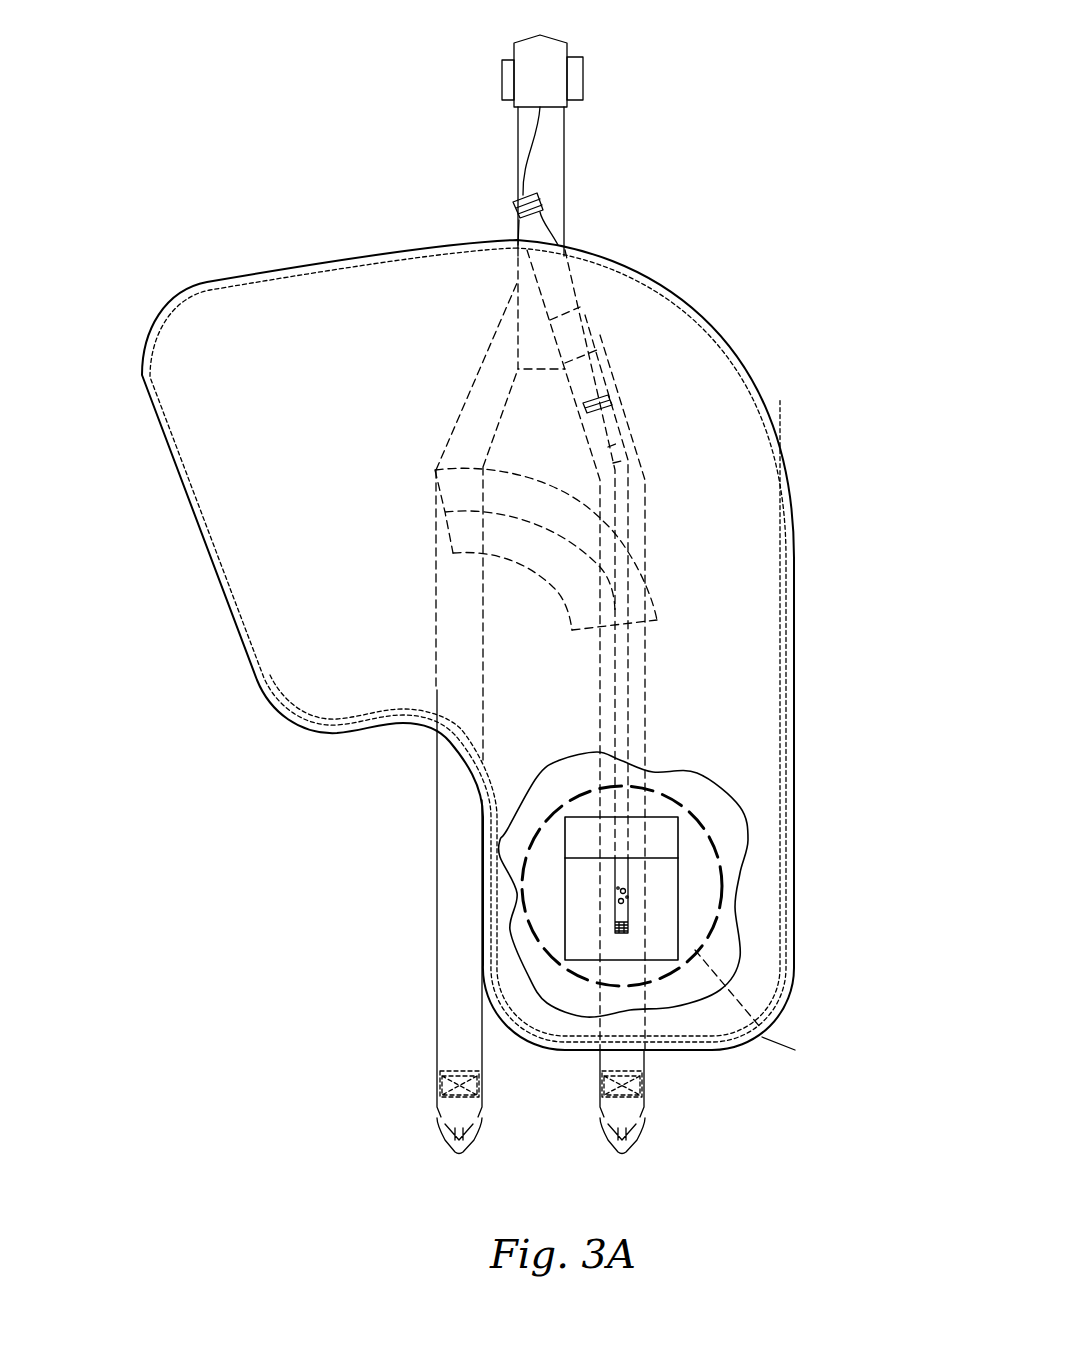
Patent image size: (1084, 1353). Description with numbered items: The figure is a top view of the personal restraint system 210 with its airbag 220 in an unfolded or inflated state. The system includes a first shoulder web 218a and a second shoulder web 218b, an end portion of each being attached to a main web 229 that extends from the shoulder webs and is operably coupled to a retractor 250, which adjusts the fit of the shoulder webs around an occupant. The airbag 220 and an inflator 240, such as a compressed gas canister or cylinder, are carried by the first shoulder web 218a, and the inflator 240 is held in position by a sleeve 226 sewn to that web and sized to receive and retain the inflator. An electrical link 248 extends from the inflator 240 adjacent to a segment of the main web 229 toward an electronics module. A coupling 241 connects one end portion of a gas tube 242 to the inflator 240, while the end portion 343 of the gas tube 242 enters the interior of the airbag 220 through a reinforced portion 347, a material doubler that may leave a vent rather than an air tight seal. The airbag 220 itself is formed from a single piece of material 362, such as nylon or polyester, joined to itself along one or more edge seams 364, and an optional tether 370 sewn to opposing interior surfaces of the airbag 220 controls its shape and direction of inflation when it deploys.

The personal restraint system 210 is at (395, 173).
The airbag 220 is at (444, 642).
The retractor 250 is at (555, 65).
The electrical link 248 is at (530, 143).
The main web 229 is at (557, 137).
The inflator 240 is at (506, 511).
The sleeve 226 is at (590, 320).
The coupling 241 is at (610, 420).
The gas tube 242 is at (627, 505).
The edge seam 364 is at (215, 540).
The single piece of material 362 is at (293, 577).
The tether 370 is at (535, 572).
The reinforced portion 347 is at (682, 884).
The end portion of the gas tube 343 is at (635, 920).
The first shoulder web 218a is at (635, 1058).
The second shoulder web 218b is at (442, 1035).